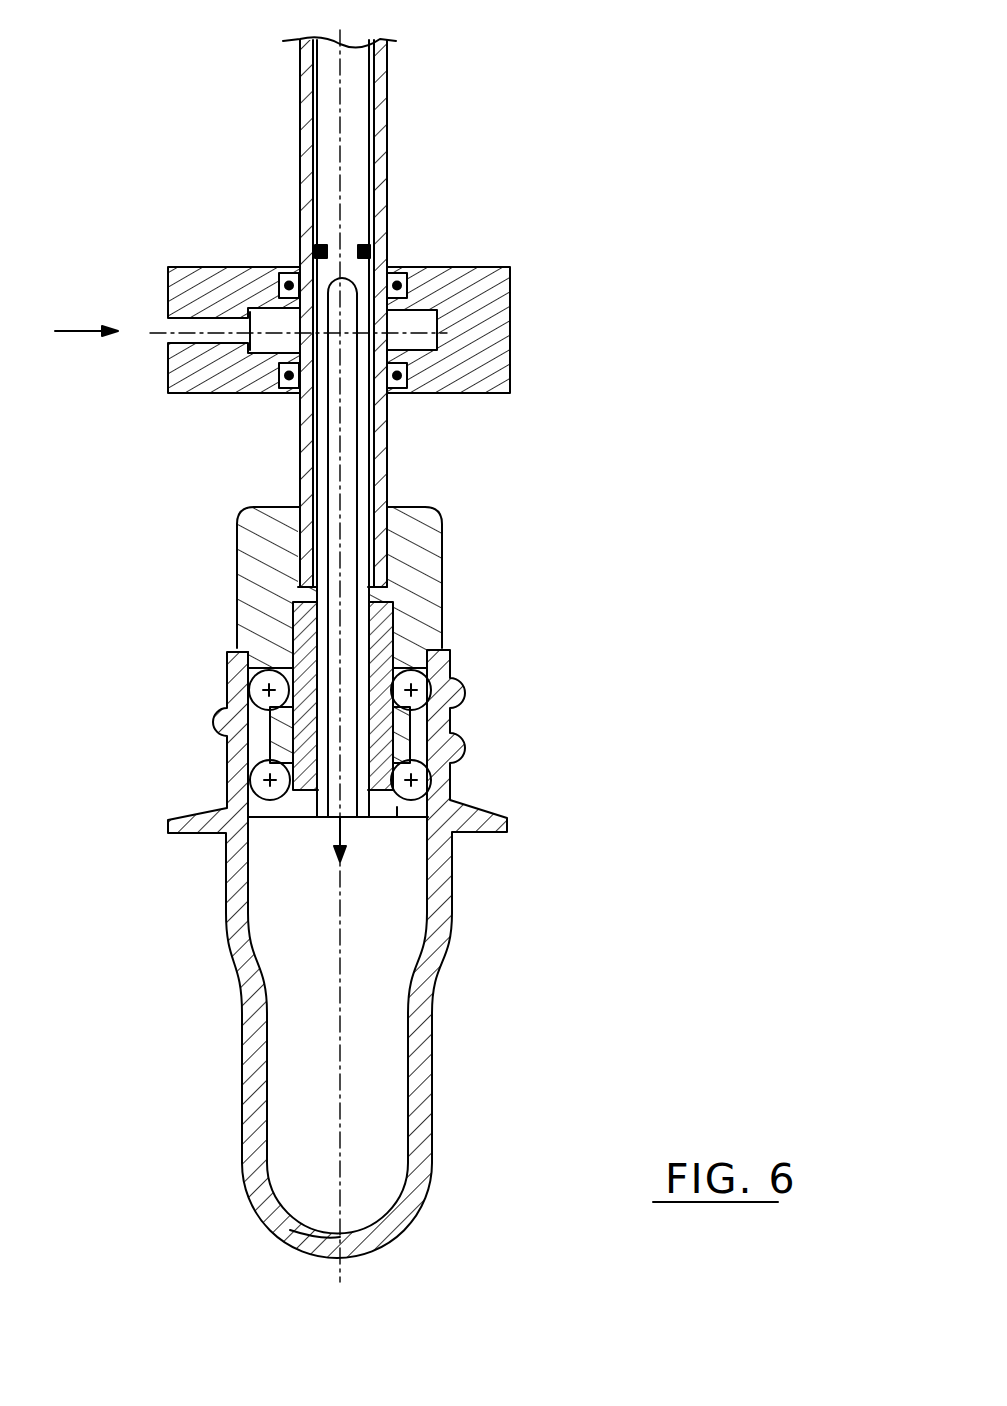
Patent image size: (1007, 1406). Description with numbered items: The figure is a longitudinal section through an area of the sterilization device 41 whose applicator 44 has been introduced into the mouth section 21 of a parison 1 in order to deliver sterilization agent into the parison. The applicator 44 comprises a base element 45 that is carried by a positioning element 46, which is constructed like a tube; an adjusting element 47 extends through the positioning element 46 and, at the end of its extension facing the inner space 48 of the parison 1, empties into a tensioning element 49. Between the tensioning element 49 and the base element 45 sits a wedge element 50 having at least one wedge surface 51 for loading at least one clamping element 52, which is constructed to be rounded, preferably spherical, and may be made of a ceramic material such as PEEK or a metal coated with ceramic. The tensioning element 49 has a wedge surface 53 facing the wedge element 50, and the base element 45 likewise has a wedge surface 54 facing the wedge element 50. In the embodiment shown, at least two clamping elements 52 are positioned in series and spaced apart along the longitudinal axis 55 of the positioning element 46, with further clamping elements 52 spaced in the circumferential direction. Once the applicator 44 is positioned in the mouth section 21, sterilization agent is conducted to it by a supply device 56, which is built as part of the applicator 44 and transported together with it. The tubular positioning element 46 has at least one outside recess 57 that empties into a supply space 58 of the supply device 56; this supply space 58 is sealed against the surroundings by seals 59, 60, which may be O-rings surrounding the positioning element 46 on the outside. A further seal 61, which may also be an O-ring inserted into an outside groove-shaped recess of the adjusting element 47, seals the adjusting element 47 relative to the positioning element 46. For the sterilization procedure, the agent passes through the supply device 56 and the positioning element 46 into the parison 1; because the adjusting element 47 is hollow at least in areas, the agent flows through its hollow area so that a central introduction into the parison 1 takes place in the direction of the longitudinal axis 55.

The parison 1 is at (378, 1048).
The mouth section 21 is at (452, 727).
The sterilization device 41 is at (572, 133).
The applicator 44 is at (525, 588).
The base element 45 is at (432, 553).
The positioning element 46 is at (388, 80).
The adjusting element 47 is at (362, 428).
The inner space 48 is at (308, 1153).
The tensioning element 49 is at (452, 847).
The wedge element 50 is at (452, 750).
The wedge surface 51 is at (397, 807).
The clamping element 52 is at (418, 780).
The wedge surface 53 is at (292, 797).
The wedge surface 54 is at (262, 652).
The longitudinal axis 55 is at (338, 1060).
The supply device 56 is at (512, 297).
The outside recess 57 is at (298, 340).
The supply space 58 is at (423, 327).
The seal 59 is at (372, 248).
The seal 60 is at (312, 380).
The seal 61 is at (313, 250).